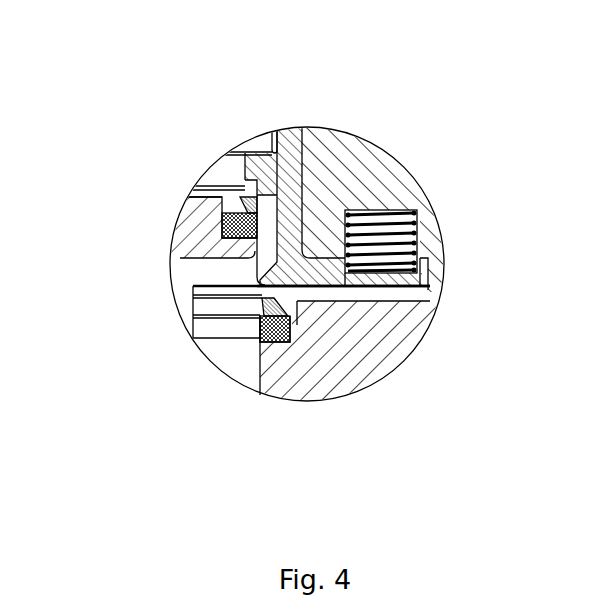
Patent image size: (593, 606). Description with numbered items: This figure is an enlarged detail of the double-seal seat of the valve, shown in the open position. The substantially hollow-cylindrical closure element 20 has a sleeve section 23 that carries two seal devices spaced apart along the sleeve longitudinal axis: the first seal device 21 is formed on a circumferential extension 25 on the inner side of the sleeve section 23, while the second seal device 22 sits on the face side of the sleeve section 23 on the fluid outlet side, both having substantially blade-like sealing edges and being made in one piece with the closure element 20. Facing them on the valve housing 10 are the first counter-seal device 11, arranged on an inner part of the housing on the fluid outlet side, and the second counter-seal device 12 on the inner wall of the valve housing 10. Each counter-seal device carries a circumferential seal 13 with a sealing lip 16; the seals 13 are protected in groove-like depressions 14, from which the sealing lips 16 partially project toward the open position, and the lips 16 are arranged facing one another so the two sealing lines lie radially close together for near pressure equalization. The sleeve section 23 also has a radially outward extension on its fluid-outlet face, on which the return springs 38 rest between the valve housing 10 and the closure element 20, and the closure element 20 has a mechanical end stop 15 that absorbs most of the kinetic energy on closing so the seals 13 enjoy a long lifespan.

The valve housing 10 is at (403, 193).
The first counter-seal device 11 is at (203, 208).
The second counter-seal device 12 is at (305, 327).
The circumferential seal 13 is at (227, 226).
The groove-like depression 14 is at (216, 248).
The mechanical end stop 15 is at (300, 284).
The sealing lip 16 is at (243, 200).
The closure element 20 is at (283, 197).
The first seal device 21 is at (240, 155).
The second seal device 22 is at (265, 272).
The sleeve section 23 is at (385, 172).
The circumferential extension 25 is at (257, 158).
The return spring 38 is at (350, 235).